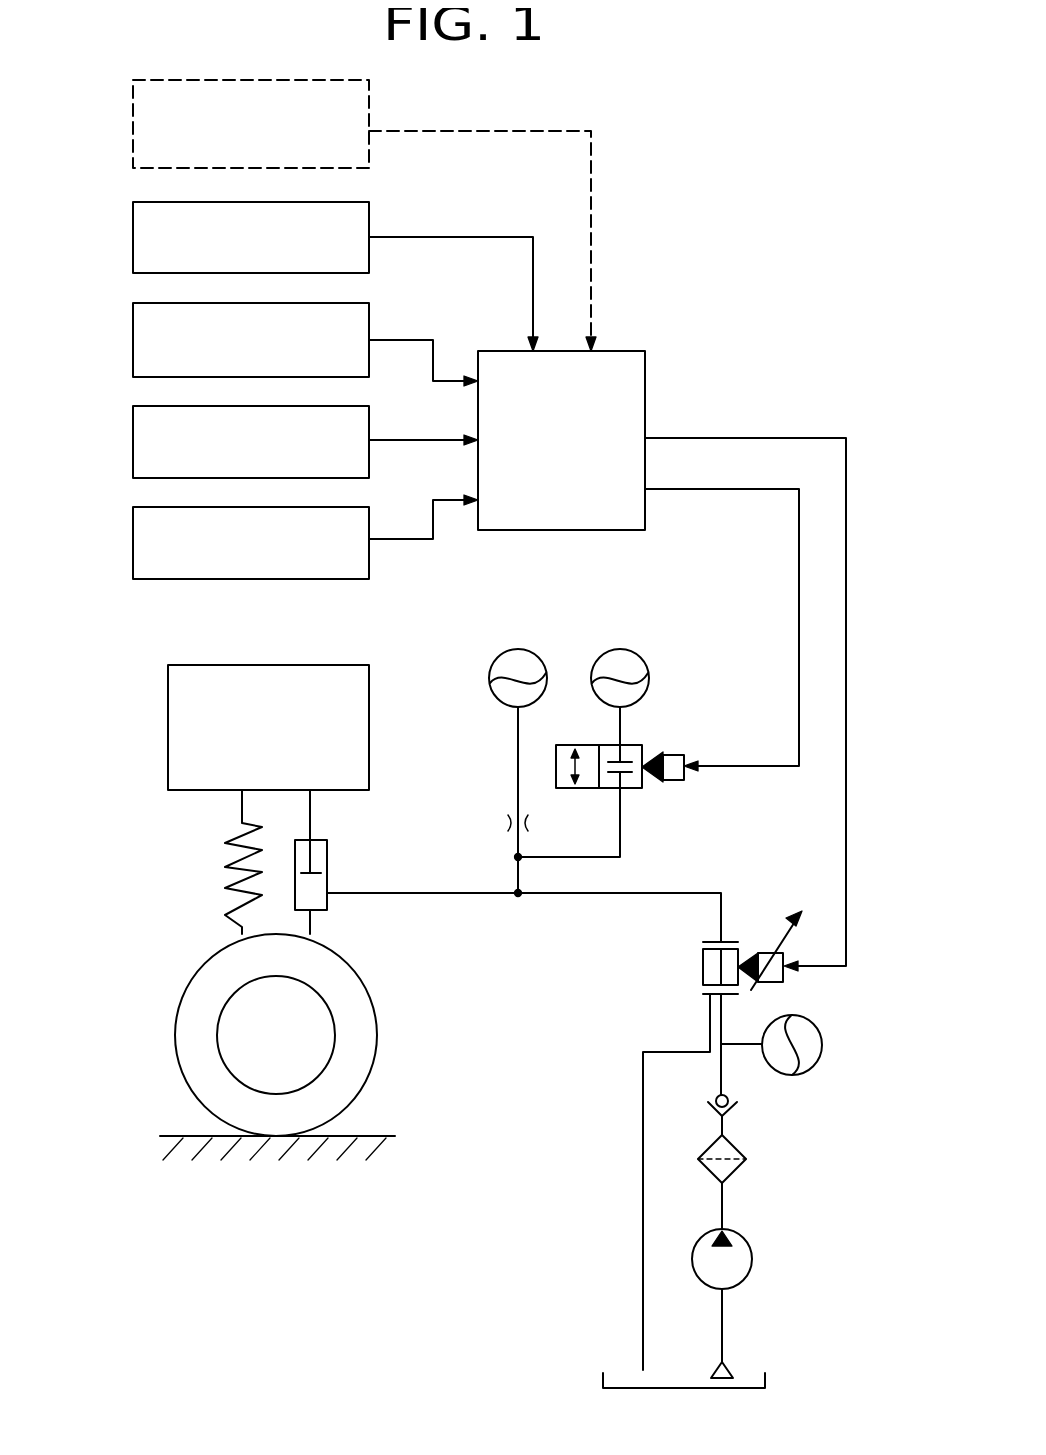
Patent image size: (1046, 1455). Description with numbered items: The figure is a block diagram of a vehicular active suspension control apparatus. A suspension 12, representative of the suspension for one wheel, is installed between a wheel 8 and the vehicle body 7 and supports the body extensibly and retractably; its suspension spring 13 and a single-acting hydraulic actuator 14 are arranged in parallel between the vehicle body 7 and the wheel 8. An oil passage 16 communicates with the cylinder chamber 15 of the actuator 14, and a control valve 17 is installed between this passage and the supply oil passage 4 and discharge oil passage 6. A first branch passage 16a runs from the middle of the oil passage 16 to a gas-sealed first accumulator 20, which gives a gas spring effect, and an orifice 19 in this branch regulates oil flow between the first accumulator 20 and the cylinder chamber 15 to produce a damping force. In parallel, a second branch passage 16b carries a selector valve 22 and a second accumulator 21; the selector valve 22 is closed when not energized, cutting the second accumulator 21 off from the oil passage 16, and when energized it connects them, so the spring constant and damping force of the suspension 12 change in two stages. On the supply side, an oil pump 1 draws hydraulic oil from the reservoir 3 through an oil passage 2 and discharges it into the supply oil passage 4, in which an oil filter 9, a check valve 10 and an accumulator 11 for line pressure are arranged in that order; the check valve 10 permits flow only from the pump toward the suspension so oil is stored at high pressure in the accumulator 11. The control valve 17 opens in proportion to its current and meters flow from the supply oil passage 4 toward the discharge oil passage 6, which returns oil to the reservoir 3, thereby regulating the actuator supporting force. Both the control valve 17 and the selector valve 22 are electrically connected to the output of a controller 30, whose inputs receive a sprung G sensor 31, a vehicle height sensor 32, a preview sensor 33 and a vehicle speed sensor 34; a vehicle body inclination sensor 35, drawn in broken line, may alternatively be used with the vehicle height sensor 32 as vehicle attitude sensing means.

The oil pump 1 is at (753, 1260).
The oil passage 2 is at (723, 1318).
The reservoir 3 is at (767, 1375).
The supply oil passage 4 is at (723, 1205).
The discharge oil passage 6 is at (643, 1173).
The vehicle body 7 is at (168, 686).
The wheel 8 is at (208, 962).
The oil filter 9 is at (743, 1150).
The check valve 10 is at (730, 1108).
The accumulator 11 is at (813, 1070).
The suspension 12 is at (231, 975).
The suspension spring 13 is at (226, 863).
The single-acting hydraulic actuator 14 is at (328, 900).
The cylinder chamber 15 is at (314, 885).
The oil passage 16 is at (627, 897).
The first branch passage 16a is at (517, 765).
The second branch passage 16b is at (625, 723).
The control valve 17 is at (787, 975).
The orifice 19 is at (508, 830).
The first accumulator 20 is at (497, 697).
The second accumulator 21 is at (647, 662).
The selector valve 22 is at (635, 742).
The controller 30 is at (646, 368).
The sprung G sensor 31 is at (133, 528).
The vehicle height sensor 32 is at (133, 428).
The preview sensor 33 is at (133, 325).
The vehicle speed sensor 34 is at (133, 223).
The vehicle body inclination sensor 35 is at (133, 119).